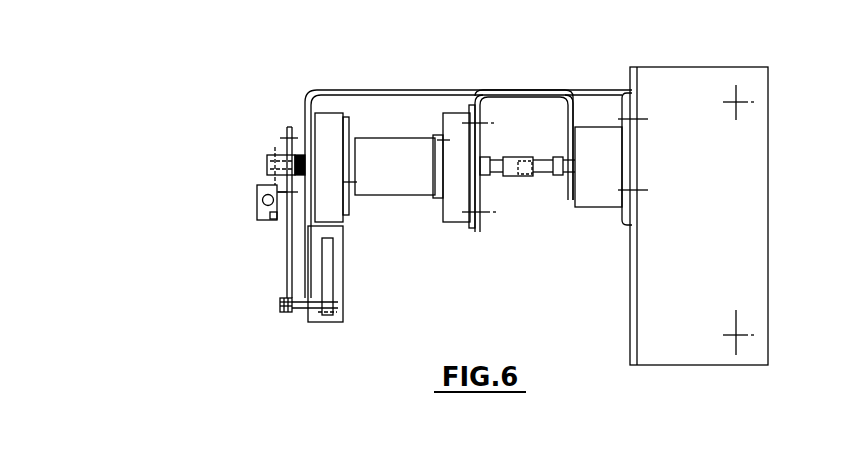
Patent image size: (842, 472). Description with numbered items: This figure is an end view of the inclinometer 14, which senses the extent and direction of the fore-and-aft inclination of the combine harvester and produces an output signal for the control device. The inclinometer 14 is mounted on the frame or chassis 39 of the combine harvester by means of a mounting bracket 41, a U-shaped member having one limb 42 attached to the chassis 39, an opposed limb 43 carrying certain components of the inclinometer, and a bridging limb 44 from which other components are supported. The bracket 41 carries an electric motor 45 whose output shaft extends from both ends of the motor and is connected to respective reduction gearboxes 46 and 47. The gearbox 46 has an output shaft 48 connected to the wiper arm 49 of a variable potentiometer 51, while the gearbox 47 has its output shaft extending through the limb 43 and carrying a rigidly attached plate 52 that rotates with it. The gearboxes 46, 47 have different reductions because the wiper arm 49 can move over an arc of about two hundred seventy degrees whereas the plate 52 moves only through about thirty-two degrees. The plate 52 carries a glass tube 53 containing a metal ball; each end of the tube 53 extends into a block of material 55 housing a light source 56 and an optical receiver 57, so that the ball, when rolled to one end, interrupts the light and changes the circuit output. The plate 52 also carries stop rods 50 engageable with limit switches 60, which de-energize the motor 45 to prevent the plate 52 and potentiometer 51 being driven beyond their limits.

The inclinometer 14 is at (243, 305).
The chassis 39 is at (760, 231).
The mounting bracket 41 is at (488, 86).
The limb 42 is at (626, 221).
The opposed limb 43 is at (304, 248).
The bridging limb 44 is at (418, 89).
The electric motor 45 is at (410, 180).
The reduction gearbox 46 is at (453, 210).
The reduction gearbox 47 is at (333, 207).
The output shaft 48 is at (493, 168).
The wiper arm 49 is at (558, 175).
The rods 50 is at (300, 308).
The variable potentiometer 51 is at (584, 177).
The plate 52 is at (285, 280).
The glass tube 53 is at (262, 200).
The block of material 55 is at (268, 213).
The light source 56 is at (257, 190).
The optical receiver 57 is at (258, 221).
The limit switches 60 is at (340, 277).